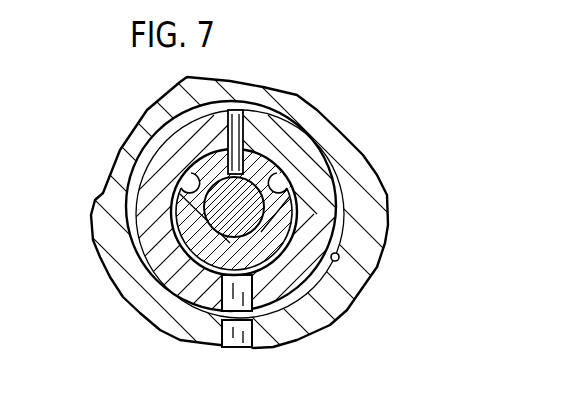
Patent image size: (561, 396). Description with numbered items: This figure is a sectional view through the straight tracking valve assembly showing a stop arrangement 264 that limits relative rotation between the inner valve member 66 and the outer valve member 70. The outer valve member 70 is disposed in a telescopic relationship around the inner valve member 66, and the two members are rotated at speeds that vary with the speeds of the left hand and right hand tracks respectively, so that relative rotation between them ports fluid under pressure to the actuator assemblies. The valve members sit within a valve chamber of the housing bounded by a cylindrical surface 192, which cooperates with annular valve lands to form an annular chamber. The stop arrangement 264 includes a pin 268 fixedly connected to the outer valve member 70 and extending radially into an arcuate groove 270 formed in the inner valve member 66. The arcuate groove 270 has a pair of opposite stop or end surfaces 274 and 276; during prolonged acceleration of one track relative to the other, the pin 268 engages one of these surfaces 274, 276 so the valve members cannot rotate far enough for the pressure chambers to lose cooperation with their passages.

The stop arrangement 264 is at (187, 78).
The pin 268 is at (235, 110).
The arcuate groove 270 is at (199, 165).
The stop surface 274 is at (213, 124).
The stop surface 276 is at (289, 186).
The inner valve member 66 is at (164, 248).
The outer valve member 70 is at (182, 243).
The cylindrical surface 192 is at (340, 256).